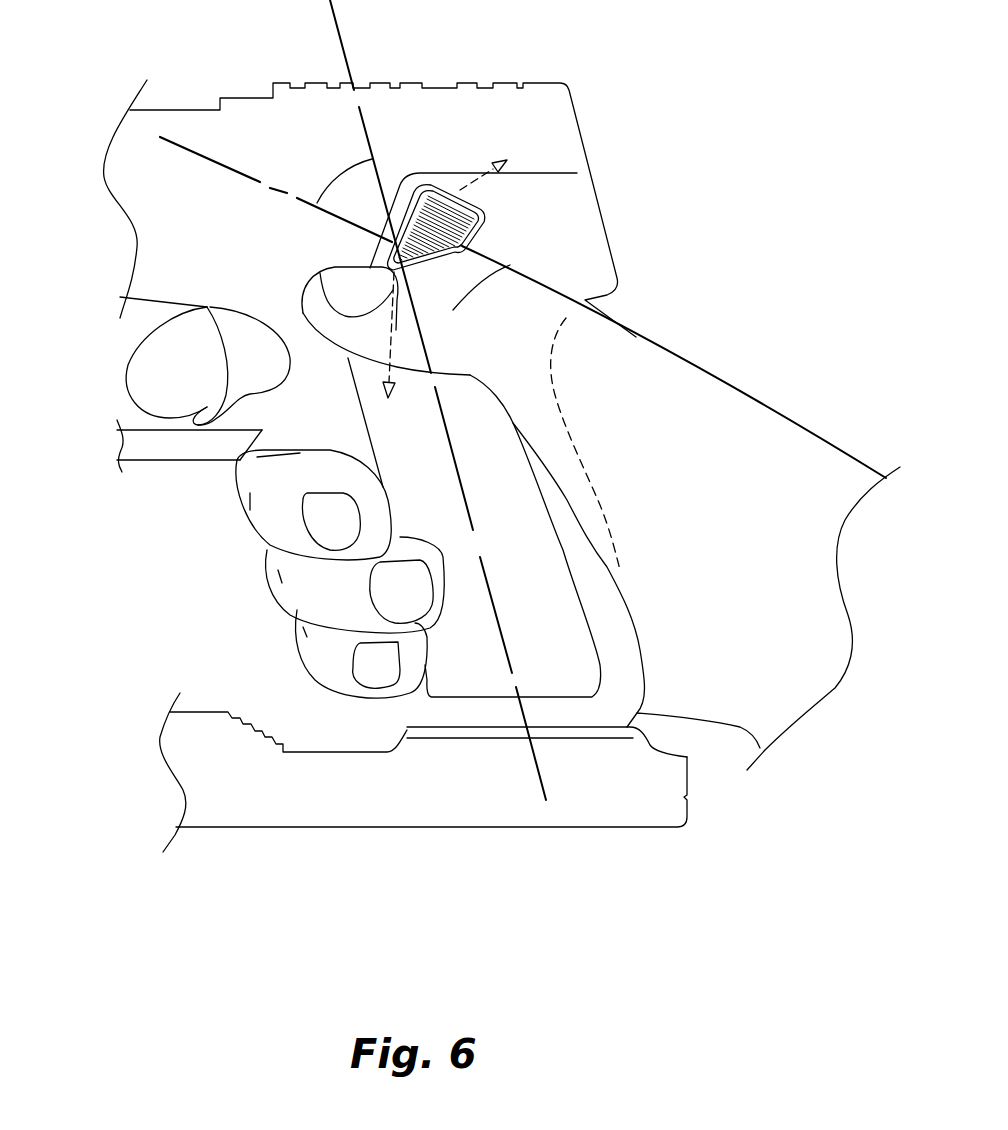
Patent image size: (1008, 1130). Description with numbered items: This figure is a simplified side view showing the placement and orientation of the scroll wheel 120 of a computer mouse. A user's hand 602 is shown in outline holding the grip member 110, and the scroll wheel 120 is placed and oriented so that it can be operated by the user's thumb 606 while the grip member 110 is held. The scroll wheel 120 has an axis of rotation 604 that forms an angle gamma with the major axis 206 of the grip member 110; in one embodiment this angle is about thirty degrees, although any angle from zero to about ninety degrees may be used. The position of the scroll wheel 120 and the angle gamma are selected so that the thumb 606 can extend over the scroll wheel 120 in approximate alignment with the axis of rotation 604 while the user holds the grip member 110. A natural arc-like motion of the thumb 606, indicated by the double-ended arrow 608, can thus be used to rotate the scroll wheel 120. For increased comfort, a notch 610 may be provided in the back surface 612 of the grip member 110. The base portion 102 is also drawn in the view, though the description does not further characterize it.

The housing base 102 is at (287, 797).
The grip member 110 is at (622, 677).
The scroll wheel 120 is at (485, 207).
The major axis 206 is at (330, 20).
The user's hand 602 is at (717, 423).
The axis of rotation 604 is at (197, 150).
The user's thumb 606 is at (507, 270).
The double-ended arrow 608 is at (462, 190).
The notch 610 is at (560, 350).
The back surface 612 is at (622, 511).